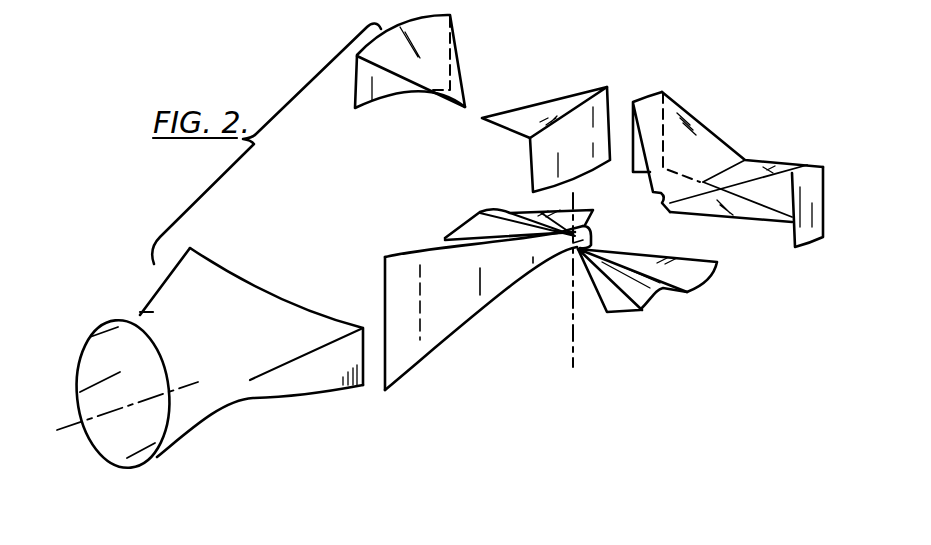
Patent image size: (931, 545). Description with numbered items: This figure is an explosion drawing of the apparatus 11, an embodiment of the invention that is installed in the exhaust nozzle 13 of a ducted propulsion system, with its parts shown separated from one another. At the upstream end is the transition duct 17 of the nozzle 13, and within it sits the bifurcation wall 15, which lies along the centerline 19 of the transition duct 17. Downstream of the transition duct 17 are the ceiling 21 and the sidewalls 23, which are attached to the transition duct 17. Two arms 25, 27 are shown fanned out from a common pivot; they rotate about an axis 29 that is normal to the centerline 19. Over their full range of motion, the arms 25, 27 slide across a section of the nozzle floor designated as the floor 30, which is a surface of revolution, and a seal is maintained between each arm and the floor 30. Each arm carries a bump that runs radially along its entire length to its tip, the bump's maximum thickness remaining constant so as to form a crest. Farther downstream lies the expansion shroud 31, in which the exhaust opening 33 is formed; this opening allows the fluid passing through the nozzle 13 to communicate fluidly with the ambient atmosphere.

The apparatus 11 is at (553, 64).
The exhaust nozzle 13 is at (227, 424).
The bifurcation wall 15 is at (427, 357).
The transition duct 17 is at (307, 395).
The centerline 19 is at (67, 430).
The ceiling 21 is at (513, 107).
The sidewalls 23 is at (353, 88).
The arm 25 is at (485, 212).
The arm 27 is at (666, 298).
The axis 29 is at (572, 283).
The floor 30 is at (593, 211).
The expansion shroud 31 is at (648, 97).
The exhaust opening 33 is at (715, 135).